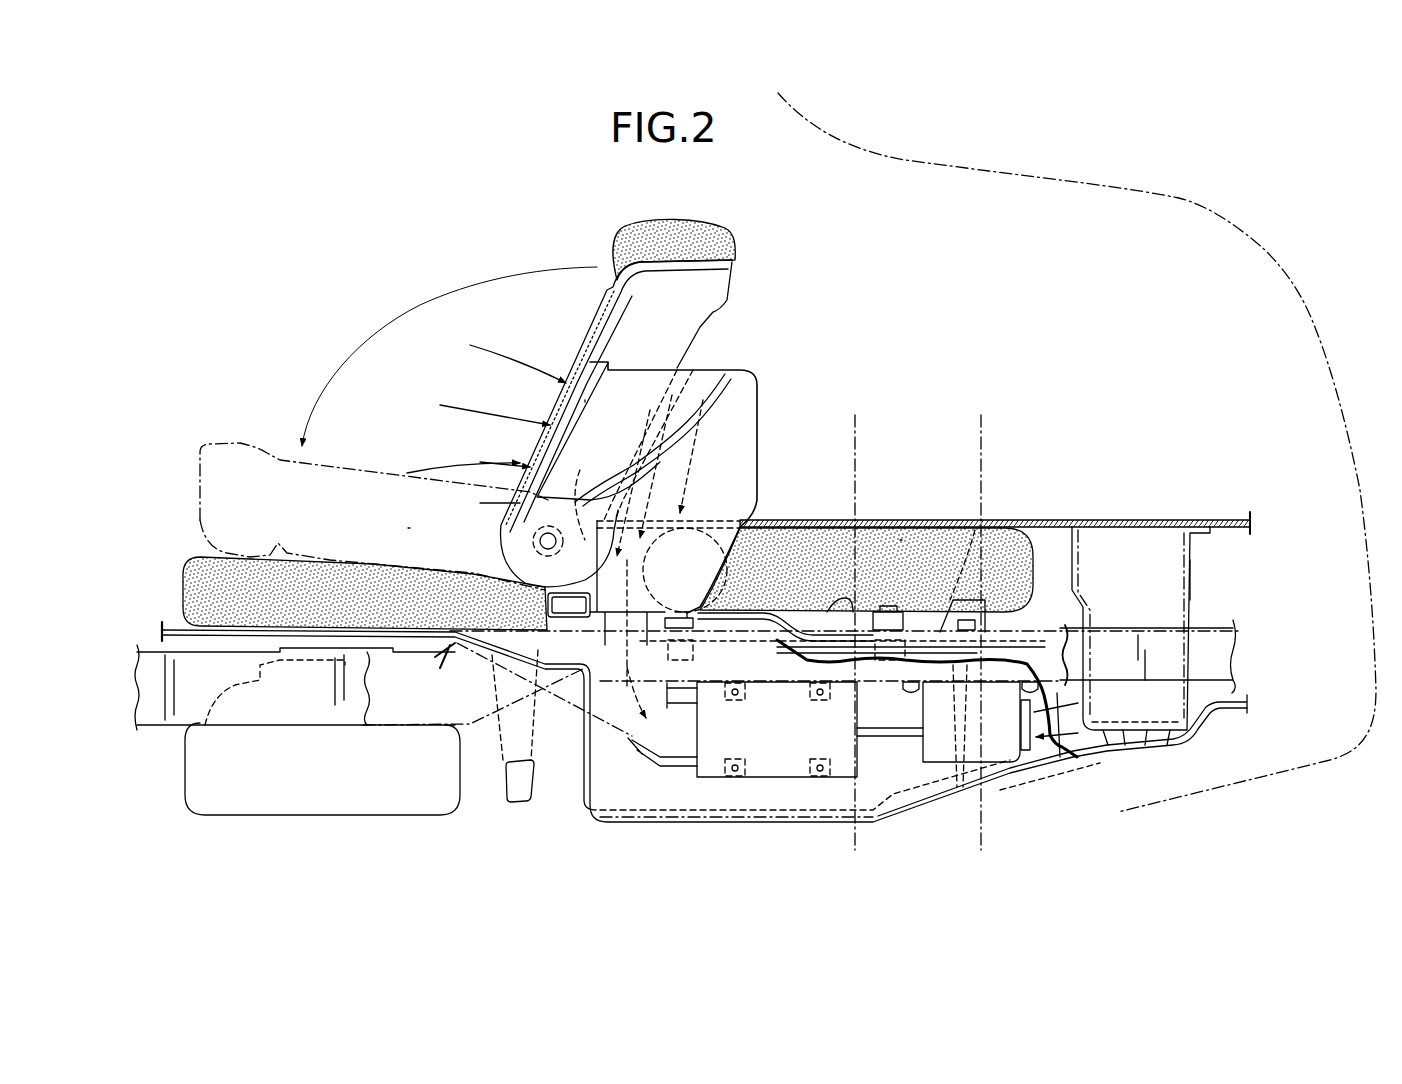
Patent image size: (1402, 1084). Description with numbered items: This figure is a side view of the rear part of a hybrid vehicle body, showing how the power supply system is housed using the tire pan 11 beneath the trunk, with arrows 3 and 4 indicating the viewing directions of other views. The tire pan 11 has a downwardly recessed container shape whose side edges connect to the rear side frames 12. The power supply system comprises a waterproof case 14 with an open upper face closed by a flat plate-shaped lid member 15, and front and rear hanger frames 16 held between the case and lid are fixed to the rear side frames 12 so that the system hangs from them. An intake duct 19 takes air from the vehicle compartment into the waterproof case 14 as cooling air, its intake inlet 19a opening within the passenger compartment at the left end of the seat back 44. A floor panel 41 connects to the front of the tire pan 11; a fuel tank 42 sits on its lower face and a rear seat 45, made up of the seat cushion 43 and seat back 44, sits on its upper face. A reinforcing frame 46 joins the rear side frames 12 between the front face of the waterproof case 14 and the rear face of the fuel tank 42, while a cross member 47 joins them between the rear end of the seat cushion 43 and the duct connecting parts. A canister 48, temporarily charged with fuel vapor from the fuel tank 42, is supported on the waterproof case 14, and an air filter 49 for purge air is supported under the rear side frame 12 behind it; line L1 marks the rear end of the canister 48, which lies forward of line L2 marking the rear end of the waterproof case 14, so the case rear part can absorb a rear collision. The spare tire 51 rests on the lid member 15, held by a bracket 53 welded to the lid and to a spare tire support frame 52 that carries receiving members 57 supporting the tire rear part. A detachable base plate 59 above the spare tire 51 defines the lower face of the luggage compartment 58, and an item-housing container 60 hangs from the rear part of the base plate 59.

The viewing direction arrow for FIG. 3 is at (905, 288).
The viewing direction arrow for FIG. 4 is at (1005, 238).
The line L1 is at (854, 620).
The line L2 is at (980, 620).
The tire pan 11 is at (1093, 750).
The rear side frame 12 is at (1120, 632).
The waterproof case 14 is at (680, 812).
The lid member 15 is at (972, 652).
The hanger frame 16 is at (679, 611).
The intake duct 19 is at (752, 446).
The intake inlet 19a is at (563, 407).
The floor panel 41 is at (178, 626).
The fuel tank 42 is at (360, 729).
The seat cushion 43 is at (452, 587).
The seat back 44 is at (525, 478).
The rear seat 45 is at (415, 492).
The reinforcing frame 46 is at (520, 802).
The cross member 47 is at (571, 620).
The canister 48 is at (775, 729).
The air filter 49 is at (990, 726).
The spare tire 51 is at (1023, 542).
The spare tire support frame 52 is at (975, 627).
The bracket 53 is at (755, 612).
The receiving member 57 is at (980, 597).
The luggage compartment 58 is at (915, 480).
The base plate 59 is at (940, 521).
The item-housing container 60 is at (1197, 578).